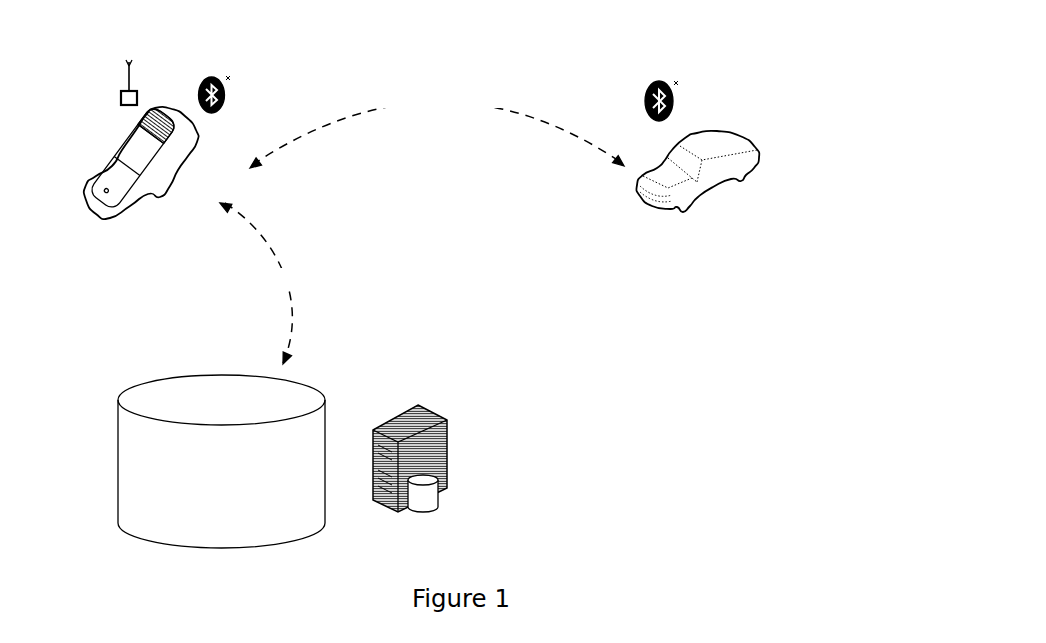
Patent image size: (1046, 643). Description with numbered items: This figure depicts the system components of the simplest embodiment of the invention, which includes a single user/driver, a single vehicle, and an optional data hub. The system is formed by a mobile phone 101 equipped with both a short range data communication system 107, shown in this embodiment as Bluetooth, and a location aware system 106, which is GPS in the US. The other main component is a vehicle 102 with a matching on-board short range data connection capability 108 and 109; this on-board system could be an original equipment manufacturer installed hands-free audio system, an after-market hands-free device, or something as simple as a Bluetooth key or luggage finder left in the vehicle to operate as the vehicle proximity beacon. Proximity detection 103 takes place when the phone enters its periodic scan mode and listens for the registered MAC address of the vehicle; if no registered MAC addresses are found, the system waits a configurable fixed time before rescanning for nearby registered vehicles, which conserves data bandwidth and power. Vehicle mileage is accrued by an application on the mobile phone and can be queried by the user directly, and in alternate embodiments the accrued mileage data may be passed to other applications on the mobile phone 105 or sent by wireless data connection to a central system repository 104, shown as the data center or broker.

The mobile phone 101 is at (97, 218).
The vehicle 102 is at (677, 207).
The scan for registered MAC address of the vehicle 103 is at (540, 115).
The central system repository 104 is at (118, 457).
The other applications on the mobile phone 105 is at (297, 316).
The location aware system 106 is at (120, 93).
The short range data communication system 107 is at (219, 78).
The on-board short range data connection capability 108 is at (866, 86).
The on-board short range data connection capability 109 is at (663, 80).